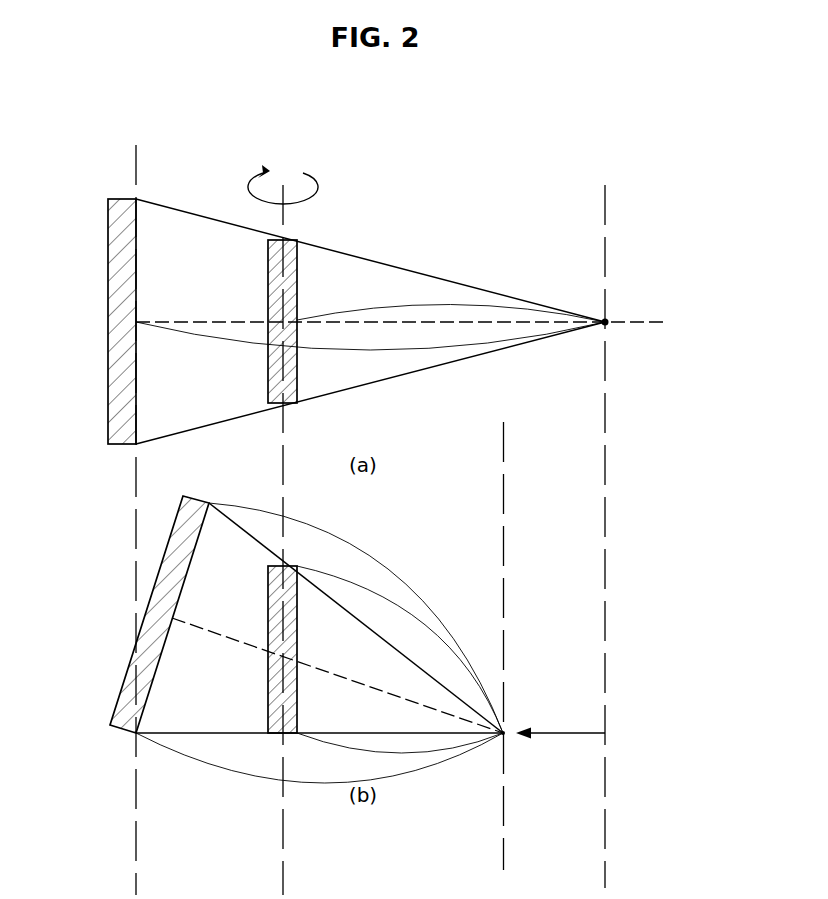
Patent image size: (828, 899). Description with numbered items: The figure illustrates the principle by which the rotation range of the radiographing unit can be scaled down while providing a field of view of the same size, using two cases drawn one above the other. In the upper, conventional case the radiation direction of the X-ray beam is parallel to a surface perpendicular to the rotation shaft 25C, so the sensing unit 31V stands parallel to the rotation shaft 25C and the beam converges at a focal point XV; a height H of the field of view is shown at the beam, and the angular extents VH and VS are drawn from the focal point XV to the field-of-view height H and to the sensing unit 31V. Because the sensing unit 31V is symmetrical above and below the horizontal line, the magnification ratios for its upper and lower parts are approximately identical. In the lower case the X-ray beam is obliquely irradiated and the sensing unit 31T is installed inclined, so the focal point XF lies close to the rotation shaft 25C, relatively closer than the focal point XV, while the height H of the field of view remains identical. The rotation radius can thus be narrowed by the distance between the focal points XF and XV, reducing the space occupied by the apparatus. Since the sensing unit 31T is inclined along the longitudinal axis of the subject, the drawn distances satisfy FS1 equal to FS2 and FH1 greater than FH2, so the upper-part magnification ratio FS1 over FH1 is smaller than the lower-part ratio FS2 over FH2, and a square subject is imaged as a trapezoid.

The sensing unit 31V is at (108, 305).
The rotation shaft 25C is at (283, 218).
The height of FOV H is at (297, 273).
The vertical viewing angle through hole VH is at (451, 308).
The vertical viewing angle to surface VS is at (370, 341).
The focal point XV is at (605, 322).
The sensing unit 31T is at (137, 640).
The distance from focal point to upper part of sensing unit FS1 is at (356, 618).
The distance from focal point to upper part of subject FH1 is at (400, 649).
The focal point XF is at (503, 733).
The distance from focal point to low part of subject FH2 is at (400, 750).
The distance from focal point to low part of sensing unit FS2 is at (319, 764).